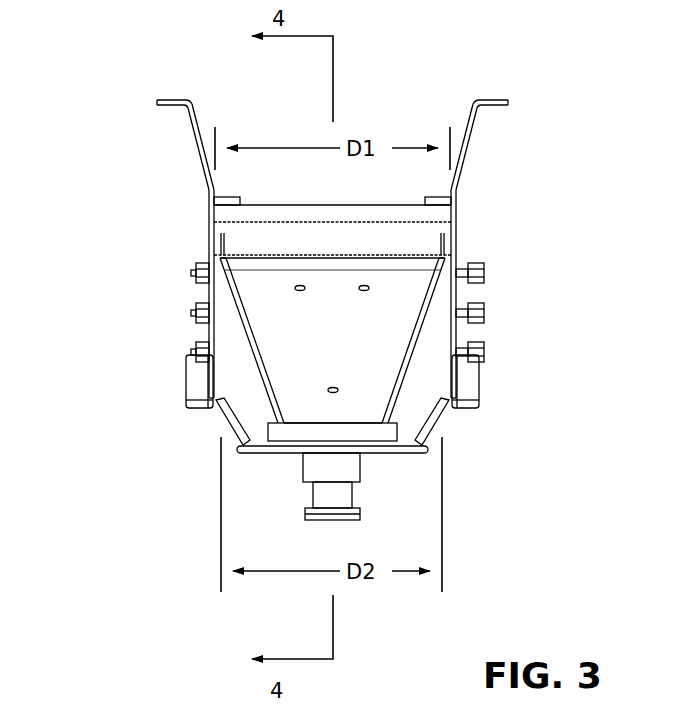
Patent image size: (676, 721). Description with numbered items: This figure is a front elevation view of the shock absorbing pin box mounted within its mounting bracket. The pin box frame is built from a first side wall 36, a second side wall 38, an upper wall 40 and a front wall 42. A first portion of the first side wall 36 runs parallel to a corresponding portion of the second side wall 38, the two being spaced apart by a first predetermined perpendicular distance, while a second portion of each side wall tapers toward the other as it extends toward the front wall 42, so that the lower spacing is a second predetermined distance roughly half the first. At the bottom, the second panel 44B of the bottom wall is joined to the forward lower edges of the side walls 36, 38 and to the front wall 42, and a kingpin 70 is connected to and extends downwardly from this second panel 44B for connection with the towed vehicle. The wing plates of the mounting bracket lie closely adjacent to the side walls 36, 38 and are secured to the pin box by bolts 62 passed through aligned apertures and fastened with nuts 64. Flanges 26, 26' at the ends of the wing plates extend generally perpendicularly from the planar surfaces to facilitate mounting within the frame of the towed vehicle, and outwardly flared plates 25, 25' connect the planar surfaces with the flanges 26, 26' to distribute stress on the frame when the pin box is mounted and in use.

The outwardly flared plate 25 is at (515, 274).
The outwardly flared plate 25' is at (147, 274).
The flange 26 is at (525, 263).
The flange 26' is at (134, 268).
The first side wall 36 is at (405, 405).
The second side wall 38 is at (258, 408).
The upper wall 40 is at (374, 332).
The front wall 42 is at (295, 438).
The second panel 44B is at (392, 457).
The bolt 62 is at (193, 352).
The nut 64 is at (484, 352).
The kingpin 70 is at (340, 521).